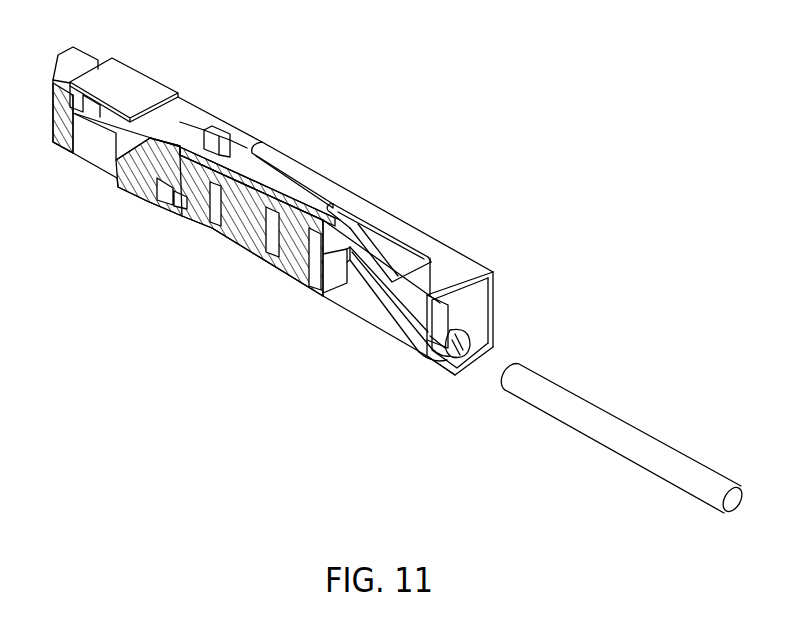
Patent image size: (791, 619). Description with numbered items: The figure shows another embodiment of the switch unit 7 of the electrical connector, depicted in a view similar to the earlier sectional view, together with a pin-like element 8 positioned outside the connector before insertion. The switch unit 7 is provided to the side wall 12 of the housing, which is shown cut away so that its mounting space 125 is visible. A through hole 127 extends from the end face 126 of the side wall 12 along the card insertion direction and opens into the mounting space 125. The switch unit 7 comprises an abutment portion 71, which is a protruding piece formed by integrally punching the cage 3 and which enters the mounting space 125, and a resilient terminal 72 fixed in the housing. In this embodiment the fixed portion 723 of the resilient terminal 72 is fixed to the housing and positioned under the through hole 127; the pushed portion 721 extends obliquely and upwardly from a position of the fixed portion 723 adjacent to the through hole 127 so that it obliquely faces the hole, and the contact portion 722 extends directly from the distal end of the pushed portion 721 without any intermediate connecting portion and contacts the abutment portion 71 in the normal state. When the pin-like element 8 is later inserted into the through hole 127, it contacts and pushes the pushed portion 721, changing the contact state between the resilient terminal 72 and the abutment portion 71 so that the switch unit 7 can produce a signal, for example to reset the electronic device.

The cage 3 is at (273, 211).
The switch unit 7 is at (365, 215).
The abutment portion 71 is at (365, 243).
The resilient terminal 72 is at (372, 300).
The pushed portion 721 is at (388, 318).
The contact portion 722 is at (347, 258).
The fixed portion 723 is at (433, 343).
The pin-like element 8 is at (593, 407).
The side wall 12 is at (250, 250).
The mounting space 125 is at (415, 297).
The end face 126 is at (482, 317).
The through hole 127 is at (440, 370).